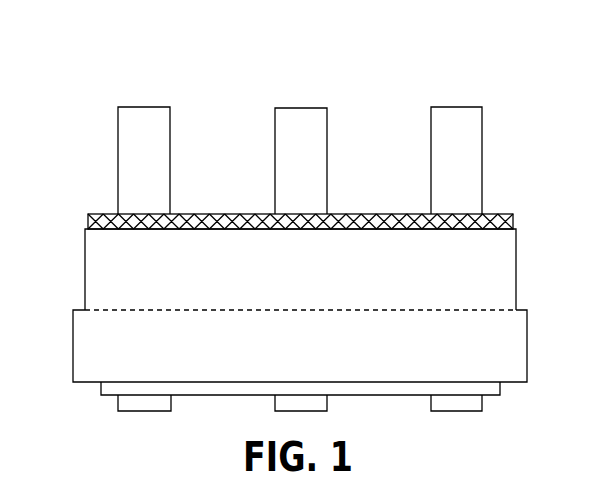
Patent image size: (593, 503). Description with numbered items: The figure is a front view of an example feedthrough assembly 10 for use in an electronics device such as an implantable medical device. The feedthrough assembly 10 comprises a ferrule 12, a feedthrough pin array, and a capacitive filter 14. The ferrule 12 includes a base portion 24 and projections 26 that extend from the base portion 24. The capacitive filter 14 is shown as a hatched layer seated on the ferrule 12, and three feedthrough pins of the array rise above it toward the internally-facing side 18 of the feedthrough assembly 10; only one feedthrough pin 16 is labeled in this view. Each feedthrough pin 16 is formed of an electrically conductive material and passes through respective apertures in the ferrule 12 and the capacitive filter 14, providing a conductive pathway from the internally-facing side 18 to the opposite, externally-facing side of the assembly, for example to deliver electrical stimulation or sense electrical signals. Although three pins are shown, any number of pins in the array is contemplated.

The feedthrough assembly 10 is at (105, 56).
The ferrule 12 is at (85, 287).
The capacitive filter 14 is at (496, 214).
The feedthrough pin 16 is at (148, 107).
The internally-facing side 18 is at (312, 71).
The base portion 24 is at (530, 350).
The projections 26 is at (504, 282).